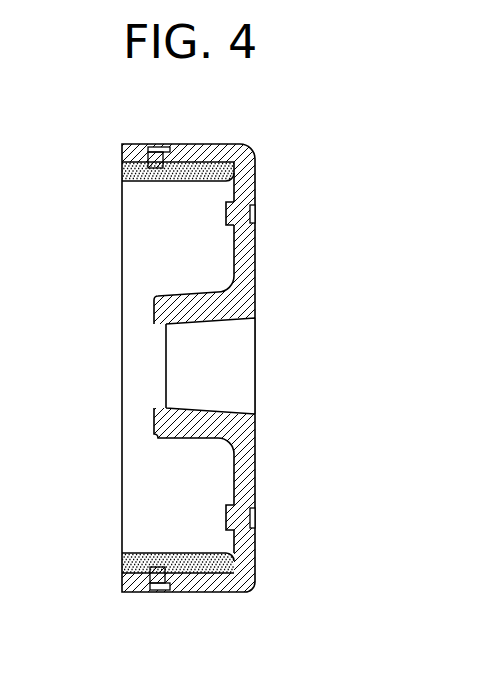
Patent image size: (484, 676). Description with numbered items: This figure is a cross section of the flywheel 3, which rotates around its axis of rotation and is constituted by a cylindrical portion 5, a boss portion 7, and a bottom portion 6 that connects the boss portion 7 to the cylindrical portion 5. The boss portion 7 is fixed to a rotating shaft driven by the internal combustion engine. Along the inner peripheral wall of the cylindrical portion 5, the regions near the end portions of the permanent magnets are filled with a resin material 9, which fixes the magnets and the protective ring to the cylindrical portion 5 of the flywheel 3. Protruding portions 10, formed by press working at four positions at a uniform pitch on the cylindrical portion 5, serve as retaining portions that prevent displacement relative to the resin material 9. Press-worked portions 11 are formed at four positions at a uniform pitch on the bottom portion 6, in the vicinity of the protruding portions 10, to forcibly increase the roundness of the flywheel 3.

The flywheel 3 is at (255, 255).
The cylindrical portion 5 is at (206, 585).
The bottom portion 6 is at (247, 285).
The boss portion 7 is at (218, 414).
The resin material 9 is at (122, 170).
The protruding portions 10 is at (153, 163).
The press-worked portions 11 is at (255, 200).